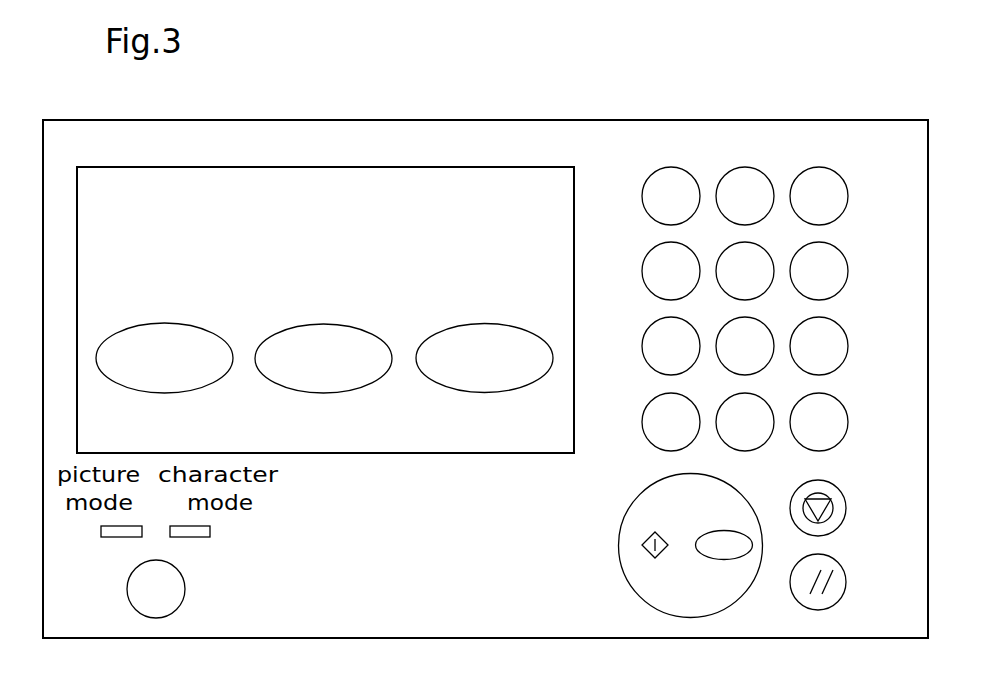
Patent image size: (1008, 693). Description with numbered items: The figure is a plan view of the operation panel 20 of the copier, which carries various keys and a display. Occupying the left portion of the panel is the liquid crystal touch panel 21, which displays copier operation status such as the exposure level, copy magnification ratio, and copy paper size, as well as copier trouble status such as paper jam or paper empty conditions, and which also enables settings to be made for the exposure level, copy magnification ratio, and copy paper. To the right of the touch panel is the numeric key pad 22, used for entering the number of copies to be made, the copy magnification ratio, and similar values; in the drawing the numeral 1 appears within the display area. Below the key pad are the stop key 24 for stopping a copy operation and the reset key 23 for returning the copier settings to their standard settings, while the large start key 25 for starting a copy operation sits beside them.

The operation panel 20 is at (443, 119).
The liquid crystal touch panel 21 is at (306, 166).
The numeric key pad 22 is at (691, 175).
The reset key 23 is at (846, 586).
The stop key 24 is at (846, 504).
The start key 25 is at (618, 548).
The copy quantity indication 1 is at (448, 293).